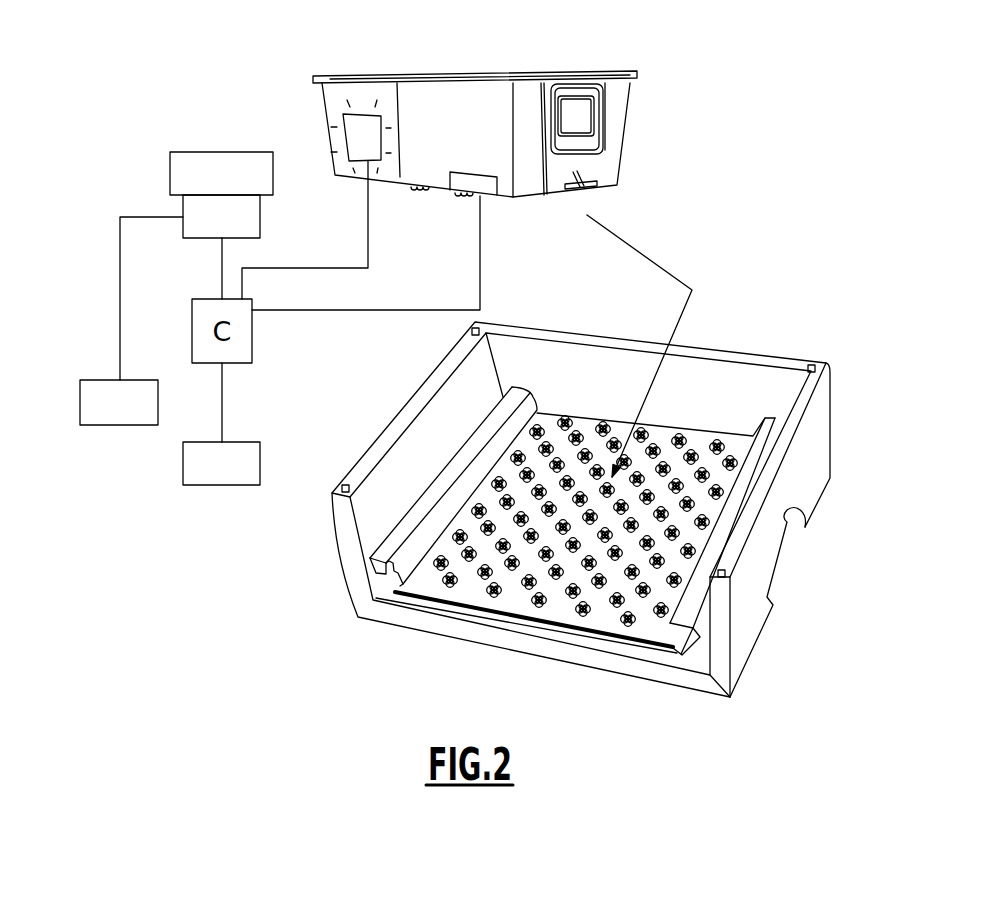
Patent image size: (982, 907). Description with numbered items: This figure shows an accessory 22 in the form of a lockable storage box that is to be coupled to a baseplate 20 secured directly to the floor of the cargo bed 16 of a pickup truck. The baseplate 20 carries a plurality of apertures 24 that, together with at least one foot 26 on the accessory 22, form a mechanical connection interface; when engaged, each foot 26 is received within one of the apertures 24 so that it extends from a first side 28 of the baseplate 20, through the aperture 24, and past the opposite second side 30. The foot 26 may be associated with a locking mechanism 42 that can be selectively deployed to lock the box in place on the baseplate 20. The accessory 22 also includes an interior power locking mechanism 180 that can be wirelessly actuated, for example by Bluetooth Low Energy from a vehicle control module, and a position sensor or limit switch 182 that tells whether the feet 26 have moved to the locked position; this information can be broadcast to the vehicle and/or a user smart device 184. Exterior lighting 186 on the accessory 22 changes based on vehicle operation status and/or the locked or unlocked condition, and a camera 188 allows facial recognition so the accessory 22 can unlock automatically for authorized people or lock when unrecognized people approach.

The cargo bed 16 is at (753, 411).
The baseplate 20 is at (561, 568).
The accessory 22 is at (497, 74).
The apertures 24 is at (480, 578).
The foot 26 is at (207, 185).
The first side 28 is at (713, 500).
The second side 30 is at (533, 618).
The locking mechanism 42 is at (578, 90).
The interior power locking mechanism 180 is at (462, 183).
The position sensor/limit switch 182 is at (200, 230).
The user smart device 184 is at (200, 475).
The exterior lighting 186 is at (367, 127).
The camera 188 is at (98, 413).